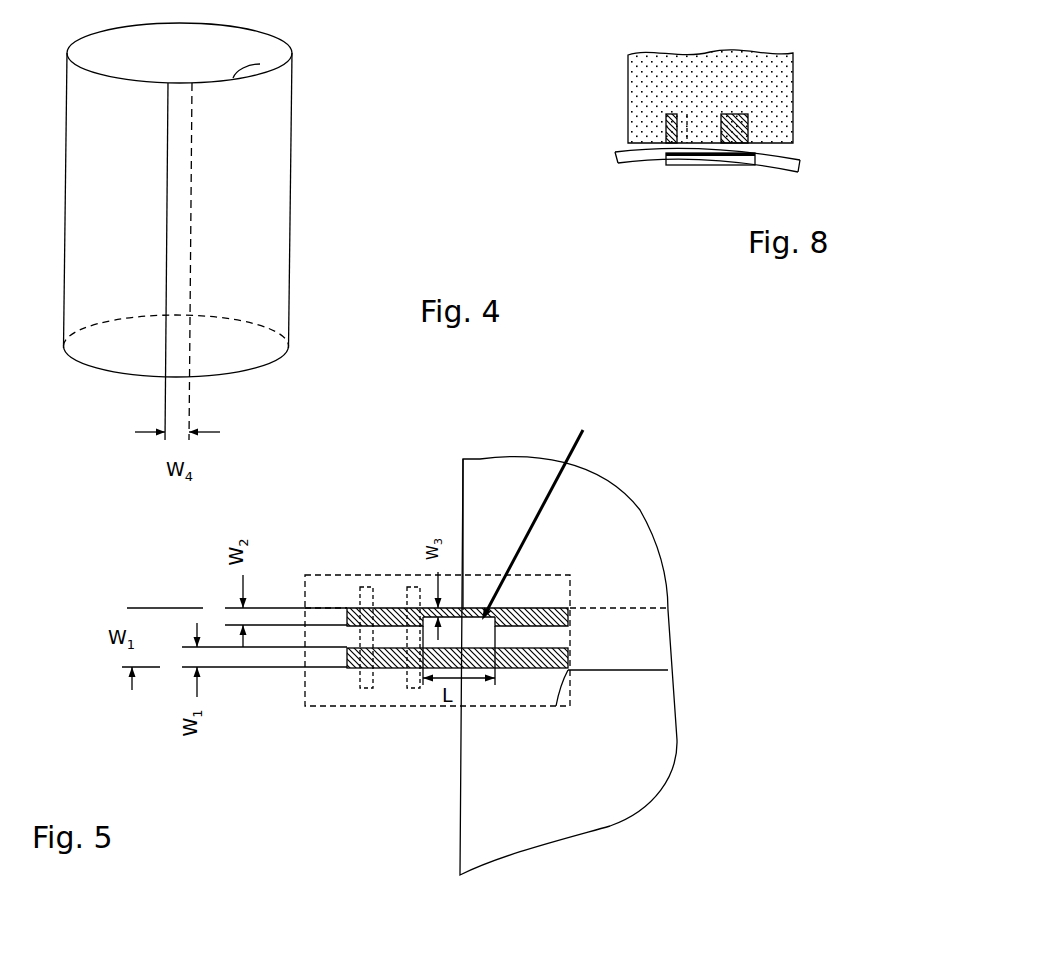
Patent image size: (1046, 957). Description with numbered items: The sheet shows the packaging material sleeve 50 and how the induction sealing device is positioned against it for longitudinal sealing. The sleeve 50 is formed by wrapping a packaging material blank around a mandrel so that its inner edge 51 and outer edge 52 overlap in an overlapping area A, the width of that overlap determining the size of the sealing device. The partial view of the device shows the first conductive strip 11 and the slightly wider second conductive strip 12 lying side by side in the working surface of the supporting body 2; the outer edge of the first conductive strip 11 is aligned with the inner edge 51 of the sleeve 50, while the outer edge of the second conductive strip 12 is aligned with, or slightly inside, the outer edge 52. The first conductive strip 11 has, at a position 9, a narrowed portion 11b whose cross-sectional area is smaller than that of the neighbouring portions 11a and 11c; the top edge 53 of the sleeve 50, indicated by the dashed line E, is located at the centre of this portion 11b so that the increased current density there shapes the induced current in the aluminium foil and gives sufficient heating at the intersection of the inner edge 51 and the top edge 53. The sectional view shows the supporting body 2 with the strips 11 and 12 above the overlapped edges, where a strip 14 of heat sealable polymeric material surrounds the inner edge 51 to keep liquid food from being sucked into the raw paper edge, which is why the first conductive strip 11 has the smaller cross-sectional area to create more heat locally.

In FIG. 8, the supporting body 2 is at (793, 70).
In FIG. 5, the position 9 is at (538, 513).
In FIG. 8, the first conductive strip 11 is at (667, 120).
In FIG. 5, the portion of the first conductive strip 11a is at (557, 608).
In FIG. 5, the portion of the first conductive strip 11b is at (482, 607).
In FIG. 5, the portion of the first conductive strip 11c is at (390, 607).
In FIG. 8, the second conductive strip 12 is at (748, 128).
In FIG. 5, the second conductive strip 12 is at (490, 683).
In FIG. 8, the strip of heat sealable polymeric material 14 is at (675, 167).
In FIG. 4, the sleeve 50 is at (267, 222).
In FIG. 8, the sleeve 50 is at (748, 160).
In FIG. 5, the sleeve 50 is at (485, 803).
In FIG. 4, the inner edge 51 is at (192, 172).
In FIG. 8, the inner edge 51 is at (665, 163).
In FIG. 5, the inner edge 51 is at (620, 607).
In FIG. 4, the outer edge 52 is at (168, 128).
In FIG. 8, the outer edge 52 is at (800, 154).
In FIG. 5, the outer edge 52 is at (607, 673).
In FIG. 4, the top edge 53 is at (260, 64).
In FIG. 5, the top edge 53 is at (463, 503).
In FIG. 4, the overlapping area A is at (175, 270).
In FIG. 5, the dashed line E is at (467, 597).